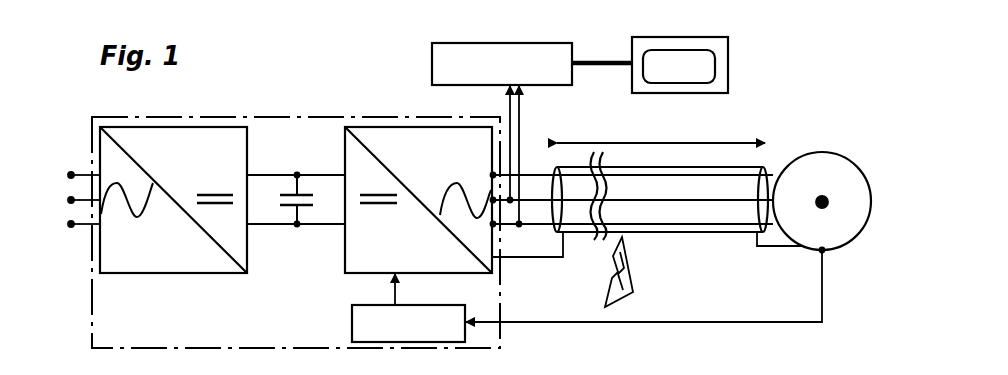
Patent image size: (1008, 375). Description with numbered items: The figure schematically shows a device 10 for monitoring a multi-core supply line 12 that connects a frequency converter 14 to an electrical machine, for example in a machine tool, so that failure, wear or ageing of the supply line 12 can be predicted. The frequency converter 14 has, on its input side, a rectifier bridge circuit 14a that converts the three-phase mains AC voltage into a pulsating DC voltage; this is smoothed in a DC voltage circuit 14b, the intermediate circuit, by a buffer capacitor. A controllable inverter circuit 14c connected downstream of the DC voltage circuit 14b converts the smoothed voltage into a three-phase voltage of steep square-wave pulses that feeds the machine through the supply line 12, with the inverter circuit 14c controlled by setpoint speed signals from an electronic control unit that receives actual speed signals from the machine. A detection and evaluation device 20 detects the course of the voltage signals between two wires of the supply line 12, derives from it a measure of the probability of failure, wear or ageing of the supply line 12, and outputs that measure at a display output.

The device 10 is at (337, 68).
The supply line 12 is at (635, 188).
The frequency converter 14 is at (293, 117).
The rectifier bridge circuit 14a is at (173, 200).
The DC voltage circuit 14b is at (296, 219).
The inverter circuit 14c is at (418, 200).
The detection and evaluation device 20 is at (502, 135).